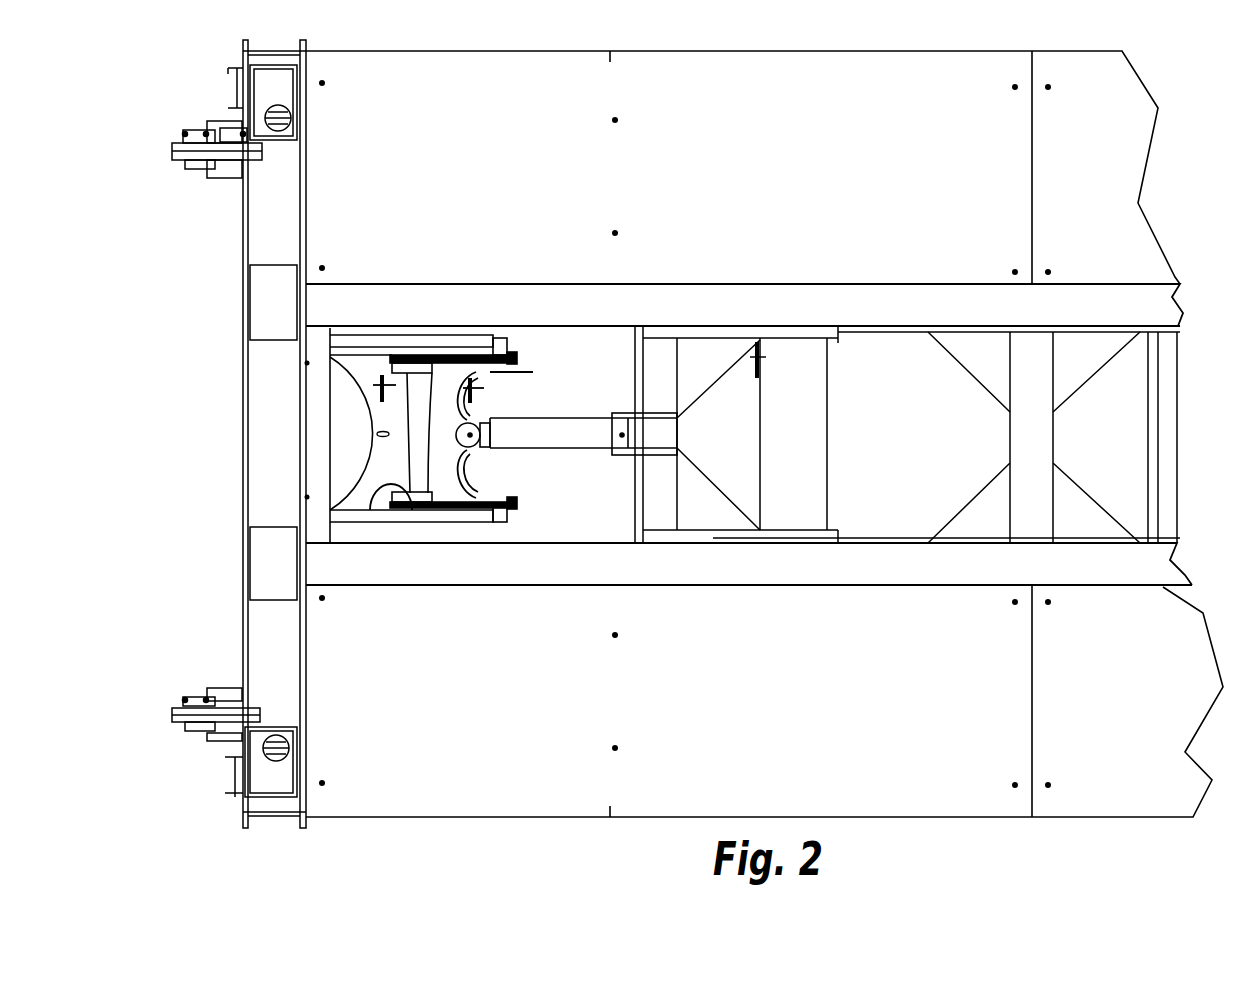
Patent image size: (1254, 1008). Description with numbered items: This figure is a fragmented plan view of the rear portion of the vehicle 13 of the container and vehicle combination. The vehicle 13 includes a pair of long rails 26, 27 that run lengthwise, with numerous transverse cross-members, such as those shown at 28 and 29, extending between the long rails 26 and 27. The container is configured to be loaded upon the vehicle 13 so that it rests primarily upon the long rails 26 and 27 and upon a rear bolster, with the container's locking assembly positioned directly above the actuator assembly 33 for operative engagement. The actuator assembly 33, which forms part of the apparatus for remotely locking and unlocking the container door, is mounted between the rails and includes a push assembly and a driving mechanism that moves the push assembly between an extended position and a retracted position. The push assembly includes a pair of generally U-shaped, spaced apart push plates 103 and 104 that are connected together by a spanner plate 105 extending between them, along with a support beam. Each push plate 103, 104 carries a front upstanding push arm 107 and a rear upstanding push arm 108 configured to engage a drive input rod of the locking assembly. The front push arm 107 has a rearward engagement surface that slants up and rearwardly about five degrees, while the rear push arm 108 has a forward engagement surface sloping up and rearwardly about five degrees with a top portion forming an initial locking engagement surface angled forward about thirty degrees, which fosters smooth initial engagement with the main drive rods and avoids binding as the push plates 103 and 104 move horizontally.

The vehicle 13 is at (1143, 78).
The long rail 26 is at (1160, 283).
The long rail 27 is at (1167, 592).
The transverse cross-member 28 is at (1003, 355).
The transverse cross-member 29 is at (1147, 523).
The actuator assembly 33 is at (533, 350).
The push plate 103 is at (513, 363).
The push plate 104 is at (515, 500).
The spanner plate 105 is at (373, 446).
The front upstanding push arm 107 is at (492, 372).
The rear upstanding push arm 108 is at (367, 548).